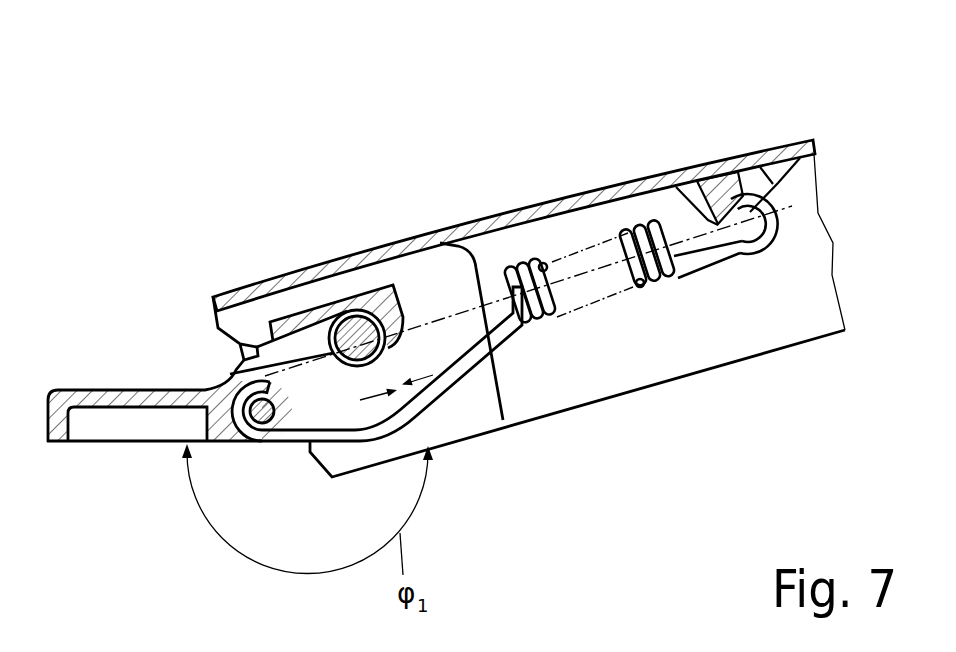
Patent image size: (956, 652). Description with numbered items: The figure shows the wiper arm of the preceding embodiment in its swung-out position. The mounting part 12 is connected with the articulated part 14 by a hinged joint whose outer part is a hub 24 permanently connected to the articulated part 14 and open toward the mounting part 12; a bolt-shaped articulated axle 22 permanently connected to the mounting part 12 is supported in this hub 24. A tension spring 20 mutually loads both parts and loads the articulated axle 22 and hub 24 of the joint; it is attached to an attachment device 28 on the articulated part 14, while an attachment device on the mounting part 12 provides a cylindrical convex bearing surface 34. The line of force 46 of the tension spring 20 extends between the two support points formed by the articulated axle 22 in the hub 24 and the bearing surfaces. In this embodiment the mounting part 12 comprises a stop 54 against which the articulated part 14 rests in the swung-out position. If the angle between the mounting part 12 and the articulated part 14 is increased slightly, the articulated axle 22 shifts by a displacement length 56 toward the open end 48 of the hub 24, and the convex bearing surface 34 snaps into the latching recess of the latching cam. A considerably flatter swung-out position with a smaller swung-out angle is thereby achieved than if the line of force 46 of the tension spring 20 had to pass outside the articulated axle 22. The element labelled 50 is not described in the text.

The mounting part 12 is at (105, 430).
The articulated part 14 is at (594, 191).
The tension spring 20 is at (535, 283).
The articulated axle 22 is at (347, 318).
The hub 24 is at (387, 310).
The attachment device 28 is at (742, 218).
The convex bearing surface 34 is at (275, 395).
The line of force 46 is at (463, 310).
The open end 48 is at (300, 360).
The spring lever strap 50 is at (237, 386).
The stop 54 is at (222, 290).
The displacement length 56 is at (390, 340).